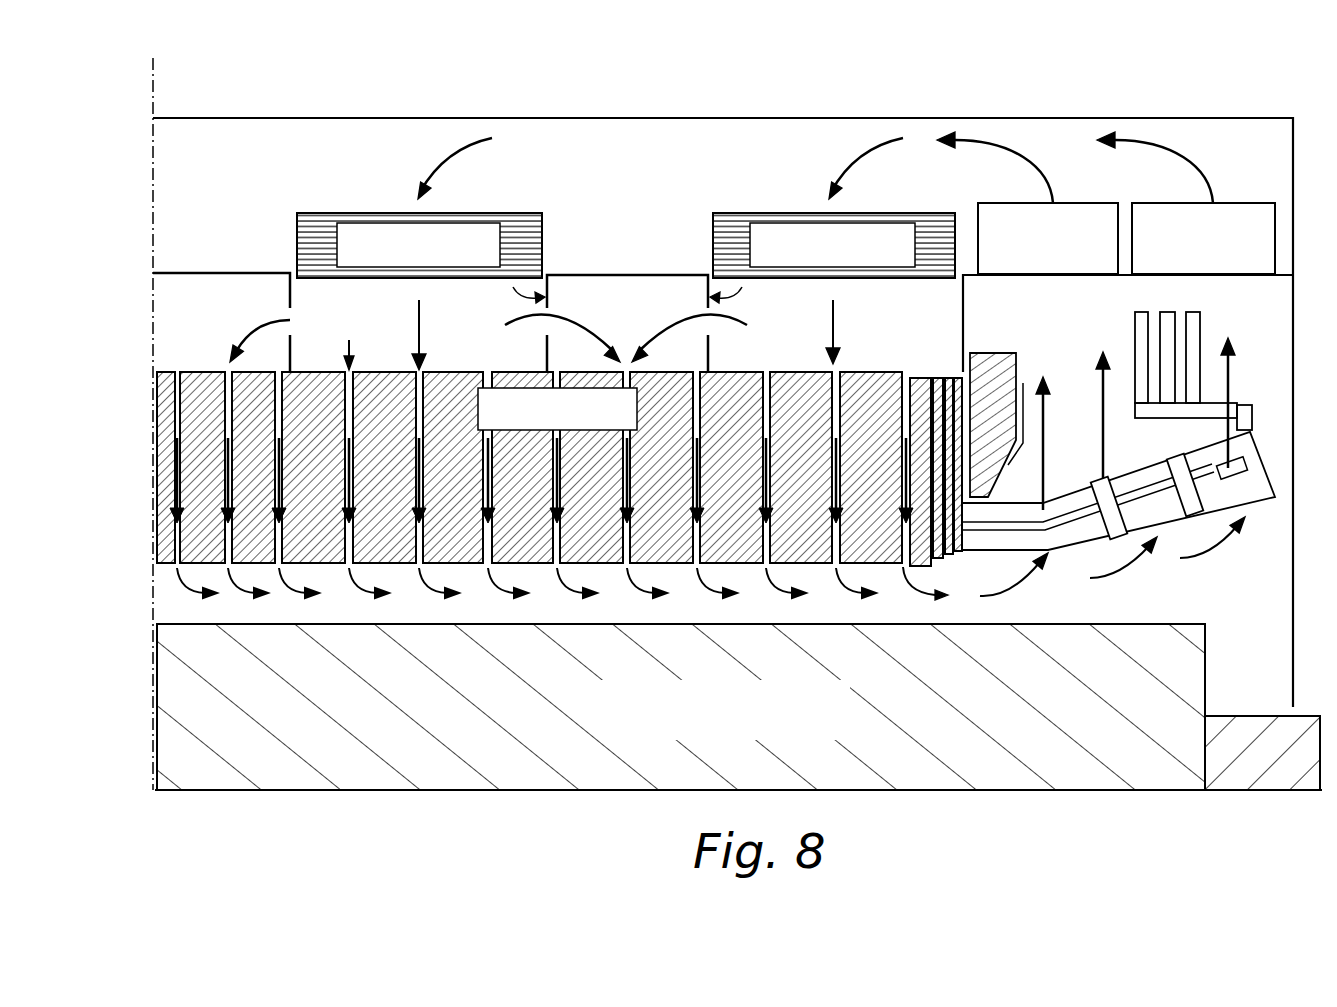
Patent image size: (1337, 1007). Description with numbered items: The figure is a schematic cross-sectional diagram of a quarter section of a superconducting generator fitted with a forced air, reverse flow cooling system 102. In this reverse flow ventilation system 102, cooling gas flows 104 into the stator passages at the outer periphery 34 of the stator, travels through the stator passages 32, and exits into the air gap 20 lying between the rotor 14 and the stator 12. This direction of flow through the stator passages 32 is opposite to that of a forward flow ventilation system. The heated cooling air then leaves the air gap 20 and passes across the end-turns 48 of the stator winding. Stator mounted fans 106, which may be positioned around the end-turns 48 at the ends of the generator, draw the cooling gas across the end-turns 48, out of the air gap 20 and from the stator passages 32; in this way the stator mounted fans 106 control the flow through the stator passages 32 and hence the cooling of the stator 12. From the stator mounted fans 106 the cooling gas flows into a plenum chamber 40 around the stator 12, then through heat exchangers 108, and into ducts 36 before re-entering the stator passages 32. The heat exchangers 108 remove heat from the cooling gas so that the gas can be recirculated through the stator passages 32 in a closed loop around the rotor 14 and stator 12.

The stator 12 is at (160, 486).
The rotor 14 is at (713, 735).
The air gap 20 is at (182, 598).
The stator passages 32 is at (178, 408).
The outer periphery of the stator 34 is at (200, 368).
The ducts 36 is at (548, 282).
The plenum chamber 40 is at (636, 181).
The end-turns of the stator winding 48 is at (1255, 462).
The reverse flow cooling system 102 is at (222, 262).
The cooling gas flow 104 is at (575, 318).
The stator mounted fans 106 is at (1075, 200).
The heat exchangers 108 is at (358, 212).